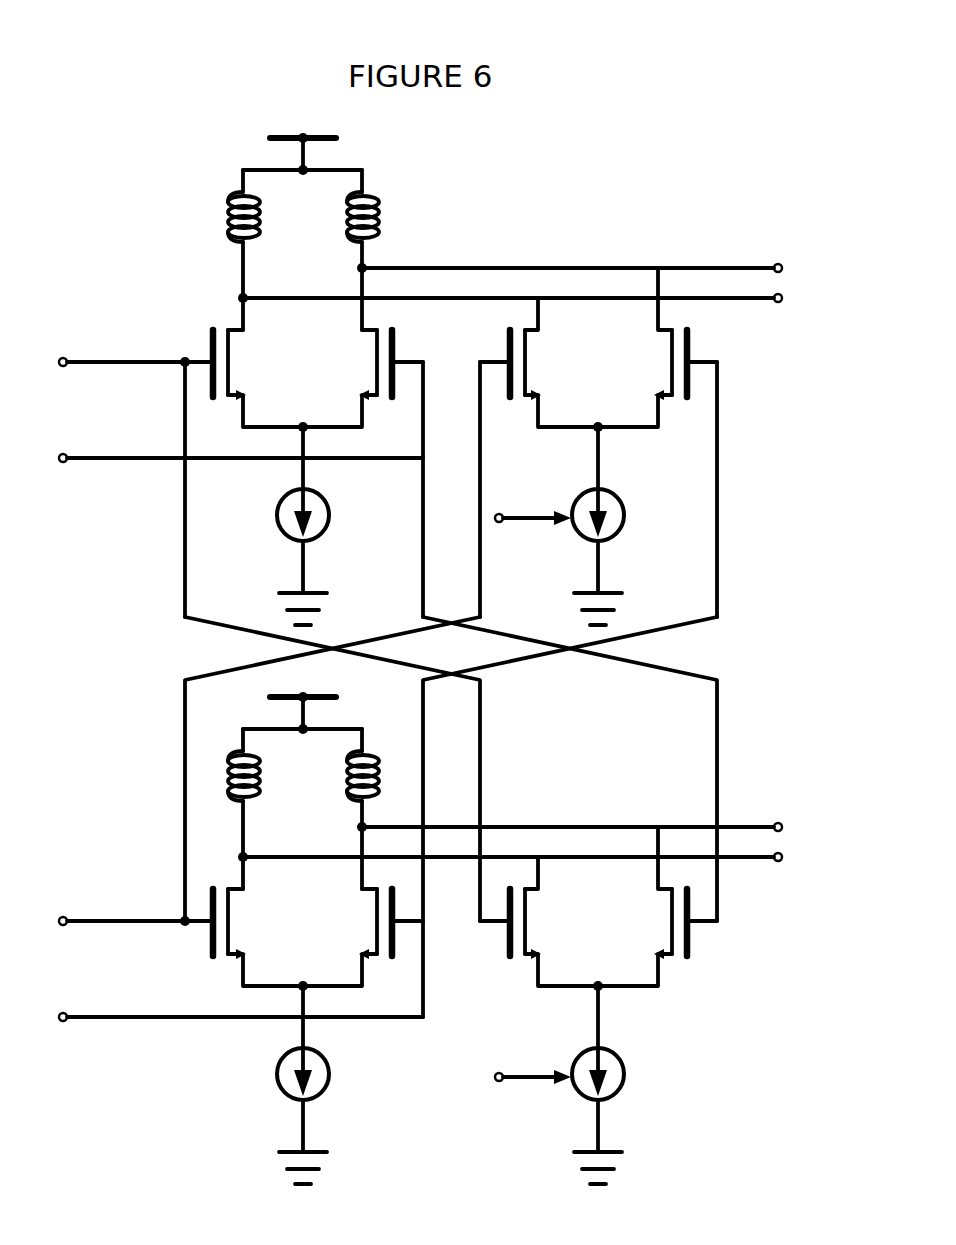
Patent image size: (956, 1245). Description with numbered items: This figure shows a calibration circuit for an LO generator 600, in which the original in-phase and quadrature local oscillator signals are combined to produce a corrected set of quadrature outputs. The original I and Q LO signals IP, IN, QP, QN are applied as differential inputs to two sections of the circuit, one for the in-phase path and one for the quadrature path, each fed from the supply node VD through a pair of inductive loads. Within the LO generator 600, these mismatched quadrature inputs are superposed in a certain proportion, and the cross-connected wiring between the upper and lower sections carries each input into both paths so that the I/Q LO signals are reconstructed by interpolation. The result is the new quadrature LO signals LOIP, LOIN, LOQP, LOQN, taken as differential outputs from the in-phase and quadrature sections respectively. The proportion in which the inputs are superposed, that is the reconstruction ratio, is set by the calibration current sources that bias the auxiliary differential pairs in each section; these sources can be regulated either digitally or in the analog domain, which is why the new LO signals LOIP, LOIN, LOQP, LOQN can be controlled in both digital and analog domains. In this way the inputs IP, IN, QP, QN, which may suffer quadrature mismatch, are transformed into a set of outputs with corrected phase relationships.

The LO generator 600 is at (578, 177).
The supply voltage node VD is at (303, 412).
The original I LO signal IP is at (104, 348).
The original I LO signal IN is at (220, 442).
The original Q LO signal QP is at (105, 905).
The original Q LO signal QN is at (220, 1038).
The new quadrature LO signal LOIP is at (604, 252).
The new quadrature LO signal LOIN is at (549, 302).
The new quadrature LO signal LOQP is at (614, 827).
The new quadrature LO signal LOQN is at (556, 862).